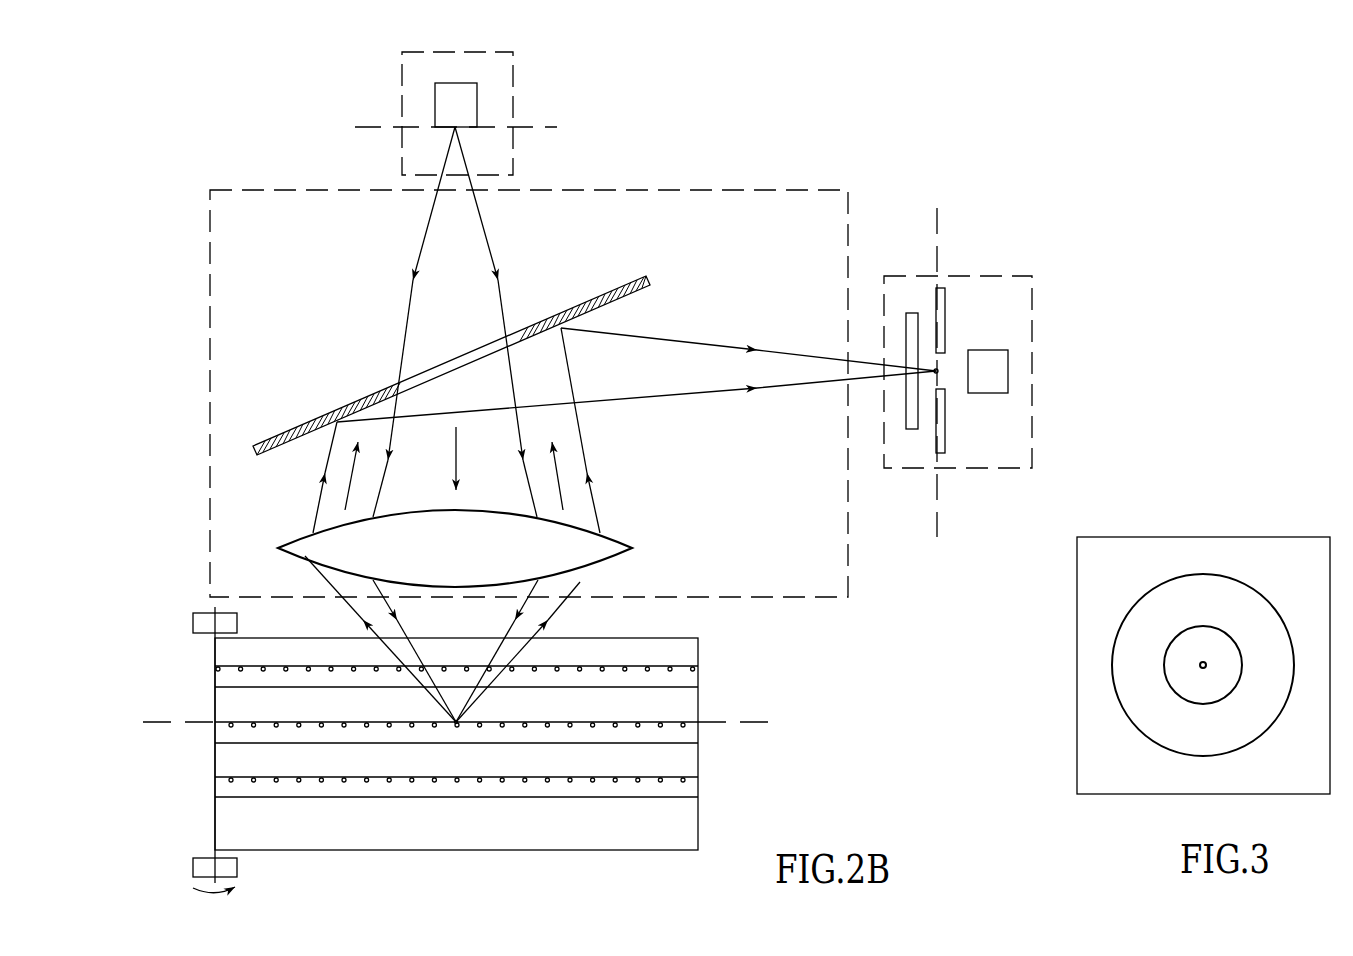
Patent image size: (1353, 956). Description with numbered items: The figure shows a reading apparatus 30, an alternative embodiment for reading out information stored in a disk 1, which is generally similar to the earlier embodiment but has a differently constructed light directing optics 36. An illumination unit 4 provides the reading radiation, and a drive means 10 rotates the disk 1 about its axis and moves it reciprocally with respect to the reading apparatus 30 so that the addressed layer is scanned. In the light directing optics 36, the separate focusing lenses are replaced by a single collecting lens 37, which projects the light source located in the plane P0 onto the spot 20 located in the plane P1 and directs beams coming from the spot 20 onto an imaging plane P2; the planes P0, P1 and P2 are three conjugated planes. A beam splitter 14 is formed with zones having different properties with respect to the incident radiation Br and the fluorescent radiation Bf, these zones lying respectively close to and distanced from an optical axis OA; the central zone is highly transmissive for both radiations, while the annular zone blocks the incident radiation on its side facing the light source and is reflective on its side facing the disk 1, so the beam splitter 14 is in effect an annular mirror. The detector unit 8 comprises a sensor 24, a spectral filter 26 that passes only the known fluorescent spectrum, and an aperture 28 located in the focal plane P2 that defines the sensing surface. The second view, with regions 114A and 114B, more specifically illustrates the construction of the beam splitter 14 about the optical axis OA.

In FIG. 2B, the reading apparatus 30 is at (270, 106).
In FIG. 2B, the illumination unit 4 is at (528, 62).
In FIG. 2B, the light directing optics 36 is at (733, 174).
In FIG. 2B, the beam splitter 14 is at (256, 412).
In FIG. 2B, the collecting lens 37 is at (612, 540).
In FIG. 2B, the disk 1 is at (702, 624).
In FIG. 2B, the drive means 10 is at (197, 612).
In FIG. 2B, the spot 20 is at (456, 722).
In FIG. 2B, the detector unit 8 is at (1016, 274).
In FIG. 2B, the sensor 24 is at (985, 350).
In FIG. 2B, the spectral filter 26 is at (905, 412).
In FIG. 2B, the aperture 28 is at (941, 286).
In FIG. 2B, the light source plane P0 is at (363, 126).
In FIG. 2B, the addressed plane P1 is at (737, 723).
In FIG. 2B, the imaging plane P2 is at (935, 225).
In FIG. 2B, the incident radiation Br is at (455, 455).
In FIG. 2B, the fluorescent radiation Bf is at (350, 492).
In FIG. 3, the outer beam region 114B is at (1137, 630).
In FIG. 3, the inner beam region 114A is at (1197, 688).
In FIG. 3, the optical axis OA is at (1203, 665).